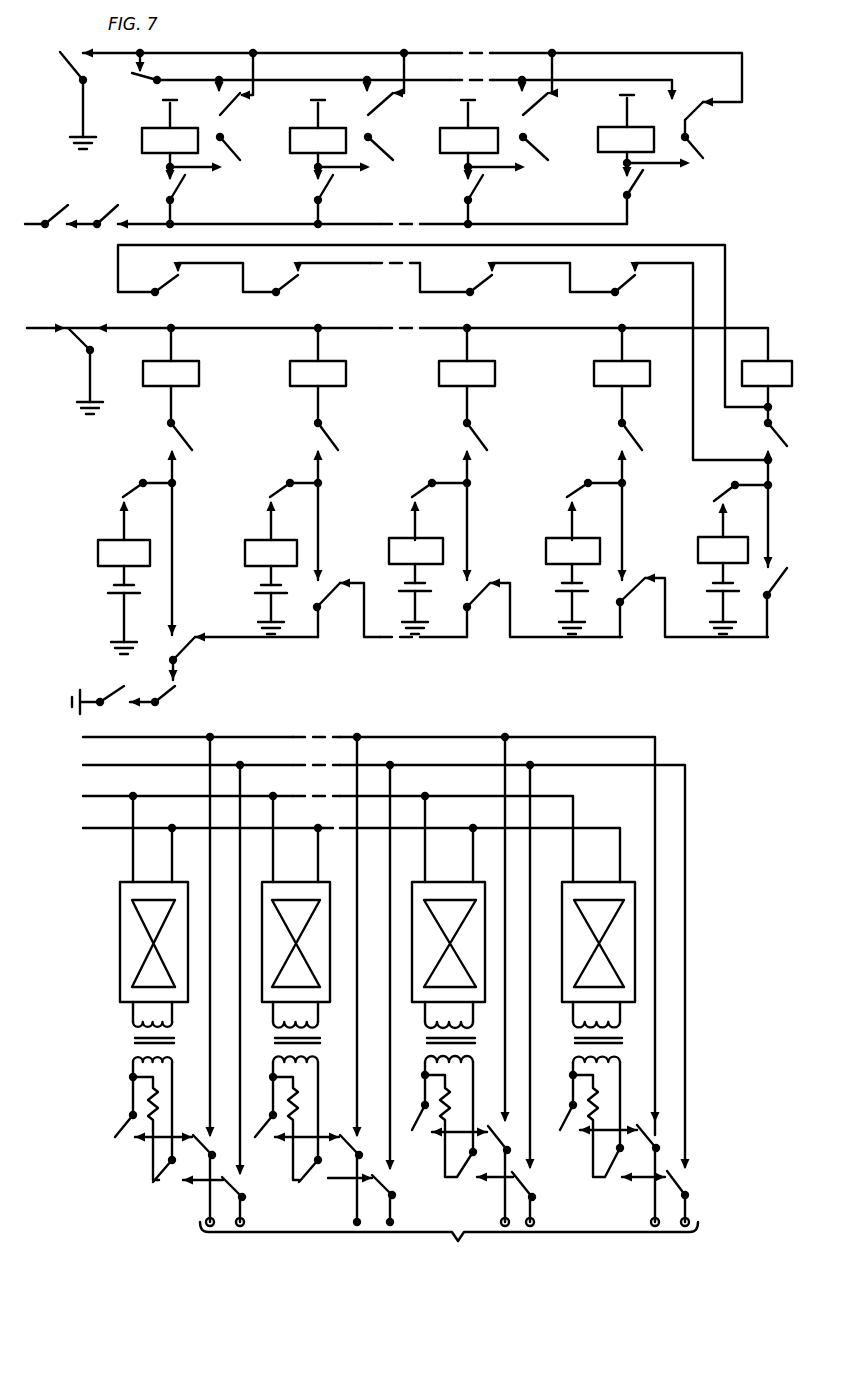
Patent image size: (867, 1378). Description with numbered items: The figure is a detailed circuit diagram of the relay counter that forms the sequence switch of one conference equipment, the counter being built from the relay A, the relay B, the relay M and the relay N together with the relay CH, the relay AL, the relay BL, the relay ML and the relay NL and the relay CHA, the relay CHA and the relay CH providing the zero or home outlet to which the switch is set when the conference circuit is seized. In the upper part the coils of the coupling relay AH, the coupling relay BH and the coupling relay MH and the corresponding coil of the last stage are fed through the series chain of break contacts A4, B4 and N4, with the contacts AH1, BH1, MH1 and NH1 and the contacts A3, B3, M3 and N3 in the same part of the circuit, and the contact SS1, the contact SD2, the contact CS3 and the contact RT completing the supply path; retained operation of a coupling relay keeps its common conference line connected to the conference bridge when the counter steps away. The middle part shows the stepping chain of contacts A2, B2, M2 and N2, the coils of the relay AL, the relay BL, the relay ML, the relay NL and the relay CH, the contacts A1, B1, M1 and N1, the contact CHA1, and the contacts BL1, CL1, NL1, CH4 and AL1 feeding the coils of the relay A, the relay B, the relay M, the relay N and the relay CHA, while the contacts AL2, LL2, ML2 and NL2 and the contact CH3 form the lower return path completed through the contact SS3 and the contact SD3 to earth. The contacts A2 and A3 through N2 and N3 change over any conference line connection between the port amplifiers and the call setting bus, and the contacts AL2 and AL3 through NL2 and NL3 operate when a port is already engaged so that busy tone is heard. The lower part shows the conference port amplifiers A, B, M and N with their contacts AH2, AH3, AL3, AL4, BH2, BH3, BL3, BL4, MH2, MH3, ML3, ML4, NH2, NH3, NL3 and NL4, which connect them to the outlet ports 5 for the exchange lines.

The reset switch RT is at (88, 322).
The cycle start contact CS3 is at (132, 84).
The contact of stepping relay SS SS1 is at (43, 201).
The stop/disable contact SD2 is at (92, 201).
The conference line coupling relay AH is at (142, 137).
The changeover contact A3 is at (186, 190).
The break contact A4 is at (239, 86).
The AH relay contact 1 AH1 is at (215, 164).
The conference line coupling relay BH is at (290, 143).
The changeover contact B3 is at (334, 190).
The break contact B4 is at (384, 89).
The BH relay contact 1 BH1 is at (365, 159).
The conference line coupling relay MH is at (463, 126).
The changeover contact M3 is at (486, 190).
The MH relay contact 1 MH1 is at (515, 159).
The changeover contact N3 is at (641, 188).
The break contact N4 is at (706, 118).
The NH relay contact 1 NH1 is at (676, 153).
The changeover contact A2 is at (213, 285).
The changeover contact B2 is at (371, 285).
The changeover contact M2 is at (540, 285).
The changeover contact N2 is at (689, 361).
The counter relay AL is at (185, 358).
The counter relay BL is at (332, 358).
The counter relay ML is at (483, 358).
The counter relay NL is at (636, 358).
The home outlet relay CH is at (761, 379).
The A relay contact 1 A1 is at (180, 428).
The B relay contact 1 B1 is at (328, 428).
The M relay contact 1 M1 is at (478, 428).
The N relay contact 1 N1 is at (632, 428).
The CHA relay contact 1 CHA1 is at (762, 444).
The BL relay contact 1 BL1 is at (136, 486).
The CL relay contact 1 CL1 is at (282, 486).
The NL relay contact 1 NL1 is at (426, 486).
The CH relay contact 4 CH4 is at (582, 486).
The AL relay contact 1 AL1 is at (730, 482).
The counter relay and conference port amplifier A is at (127, 771).
The counter relay and conference port amplifier B is at (274, 771).
The counter relay and conference port amplifier M is at (422, 770).
The counter relay and conference port amplifier N is at (577, 770).
The home outlet relay CHA is at (702, 585).
The busy tone contact AL2 is at (336, 570).
The LL relay contact 2 LL2 is at (486, 570).
The busy tone contact ML2 is at (638, 562).
The busy tone contact NL2 is at (778, 578).
The CH relay contact 3 CH3 is at (190, 624).
The contact of stepping relay SS SS3 is at (98, 691).
The stop contact 3 SD3 is at (174, 702).
The AH relay contact 2 AH2 is at (114, 1139).
The AH relay contact 3 AH3 is at (160, 1184).
The busy tone contact AL3 is at (200, 1130).
The AL relay contact 4 AL4 is at (230, 1201).
The BH relay contact 2 BH2 is at (264, 1138).
The BH relay contact 3 BH3 is at (306, 1184).
The busy tone contact BL3 is at (346, 1126).
The BL relay contact 4 BL4 is at (394, 1184).
The MH relay contact 2 MH2 is at (416, 1134).
The MH relay contact 3 MH3 is at (460, 1138).
The busy tone contact ML3 is at (494, 1116).
The ML relay contact 4 ML4 is at (524, 1176).
The NH relay contact 2 NH2 is at (585, 1103).
The NH relay contact 3 NH3 is at (598, 1140).
The busy tone contact NL3 is at (646, 1128).
The NL relay contact 4 NL4 is at (678, 1172).
The outlet ports 5 is at (449, 1242).